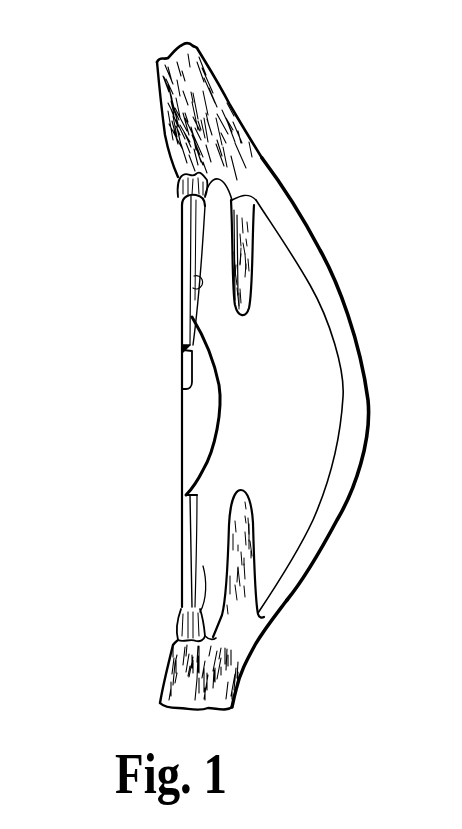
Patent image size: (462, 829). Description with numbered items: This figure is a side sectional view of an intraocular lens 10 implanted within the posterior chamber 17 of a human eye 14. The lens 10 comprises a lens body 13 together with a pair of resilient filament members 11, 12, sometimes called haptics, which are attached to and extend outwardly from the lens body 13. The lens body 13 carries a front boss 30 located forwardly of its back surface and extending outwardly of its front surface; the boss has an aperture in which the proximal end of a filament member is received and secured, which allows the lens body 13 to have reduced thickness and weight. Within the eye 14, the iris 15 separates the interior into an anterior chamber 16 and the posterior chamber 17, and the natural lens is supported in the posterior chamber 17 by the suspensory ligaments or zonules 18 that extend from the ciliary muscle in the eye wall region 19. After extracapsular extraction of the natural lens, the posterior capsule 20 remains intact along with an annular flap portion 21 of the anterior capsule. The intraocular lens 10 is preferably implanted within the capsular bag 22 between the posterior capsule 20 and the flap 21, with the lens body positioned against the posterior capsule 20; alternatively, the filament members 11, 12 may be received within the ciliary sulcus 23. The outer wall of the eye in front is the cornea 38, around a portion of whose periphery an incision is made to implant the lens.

The intraocular lens 10 is at (233, 386).
The resilient filament member 11 is at (190, 287).
The resilient filament member 12 is at (187, 523).
The lens body 13 is at (190, 423).
The human eye 14 is at (284, 127).
The iris 15 is at (250, 288).
The anterior chamber 16 is at (295, 533).
The posterior chamber 17 is at (223, 251).
The zonules 18 is at (180, 630).
The eye wall region 19 is at (182, 648).
The posterior capsule 20 is at (181, 262).
The annular flap portion 21 is at (215, 199).
The capsular bag 22 is at (183, 598).
The ciliary sulcus 23 is at (215, 627).
The front boss 30 is at (187, 369).
The cornea 38 is at (358, 400).